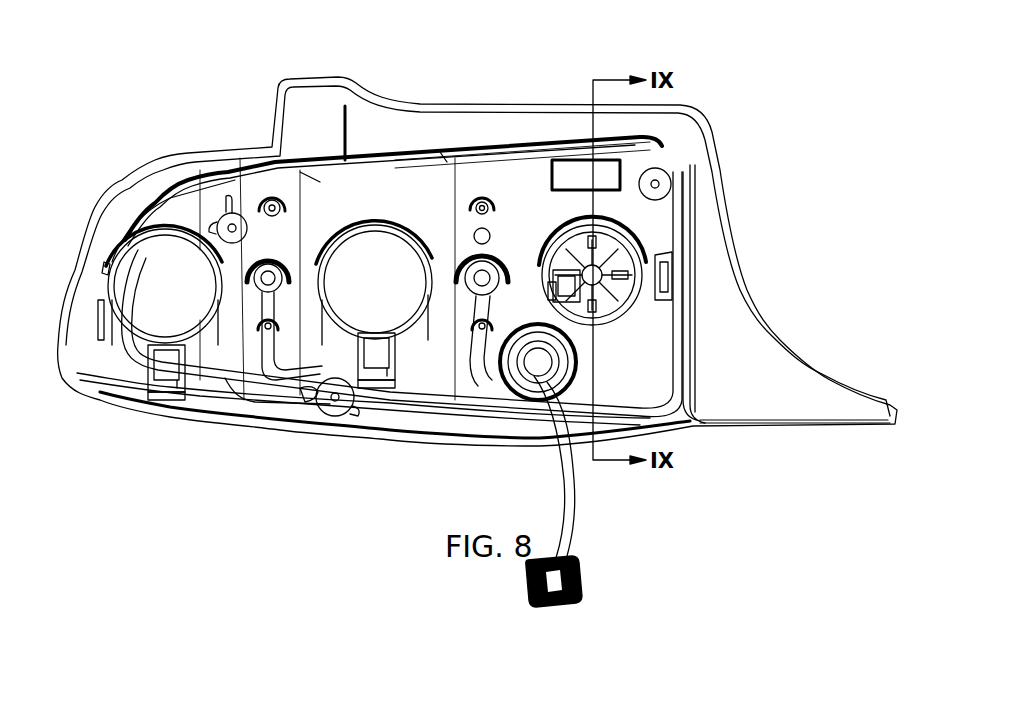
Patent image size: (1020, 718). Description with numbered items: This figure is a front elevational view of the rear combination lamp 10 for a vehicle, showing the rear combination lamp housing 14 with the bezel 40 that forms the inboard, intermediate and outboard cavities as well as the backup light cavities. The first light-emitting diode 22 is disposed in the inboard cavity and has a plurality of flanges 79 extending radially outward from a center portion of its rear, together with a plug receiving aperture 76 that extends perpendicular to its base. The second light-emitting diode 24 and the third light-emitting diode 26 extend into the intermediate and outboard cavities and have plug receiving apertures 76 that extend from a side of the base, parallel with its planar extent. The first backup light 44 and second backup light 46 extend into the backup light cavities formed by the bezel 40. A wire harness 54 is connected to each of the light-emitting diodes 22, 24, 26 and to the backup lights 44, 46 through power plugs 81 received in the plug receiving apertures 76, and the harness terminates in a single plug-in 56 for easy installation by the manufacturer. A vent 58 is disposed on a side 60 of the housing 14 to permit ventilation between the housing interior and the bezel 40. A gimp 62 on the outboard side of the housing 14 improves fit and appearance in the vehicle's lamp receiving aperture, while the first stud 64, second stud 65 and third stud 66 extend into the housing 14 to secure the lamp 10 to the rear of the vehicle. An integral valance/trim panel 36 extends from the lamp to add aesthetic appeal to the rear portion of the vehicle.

The rear combination lamp 10 is at (752, 76).
The rear combination lamp housing 14 is at (692, 140).
The first light-emitting diode 22 is at (560, 240).
The second light-emitting diode 24 is at (385, 250).
The third light-emitting diode 26 is at (140, 272).
The integral valance/trim panel 36 is at (778, 395).
The bezel 40 is at (692, 345).
The first backup light 44 is at (483, 270).
The second backup light 46 is at (270, 200).
The wire harness 54 is at (272, 395).
The single plug-in 56 is at (578, 588).
The vent 58 is at (570, 160).
The side of the rear combination lamp housing 60 is at (409, 202).
The gimp 62 is at (140, 168).
The first stud 64 is at (662, 190).
The second stud 65 is at (345, 405).
The third stud 66 is at (230, 220).
The plug receiving aperture 76 is at (564, 246).
The flanges 79 is at (640, 238).
The power plugs 81 is at (146, 404).